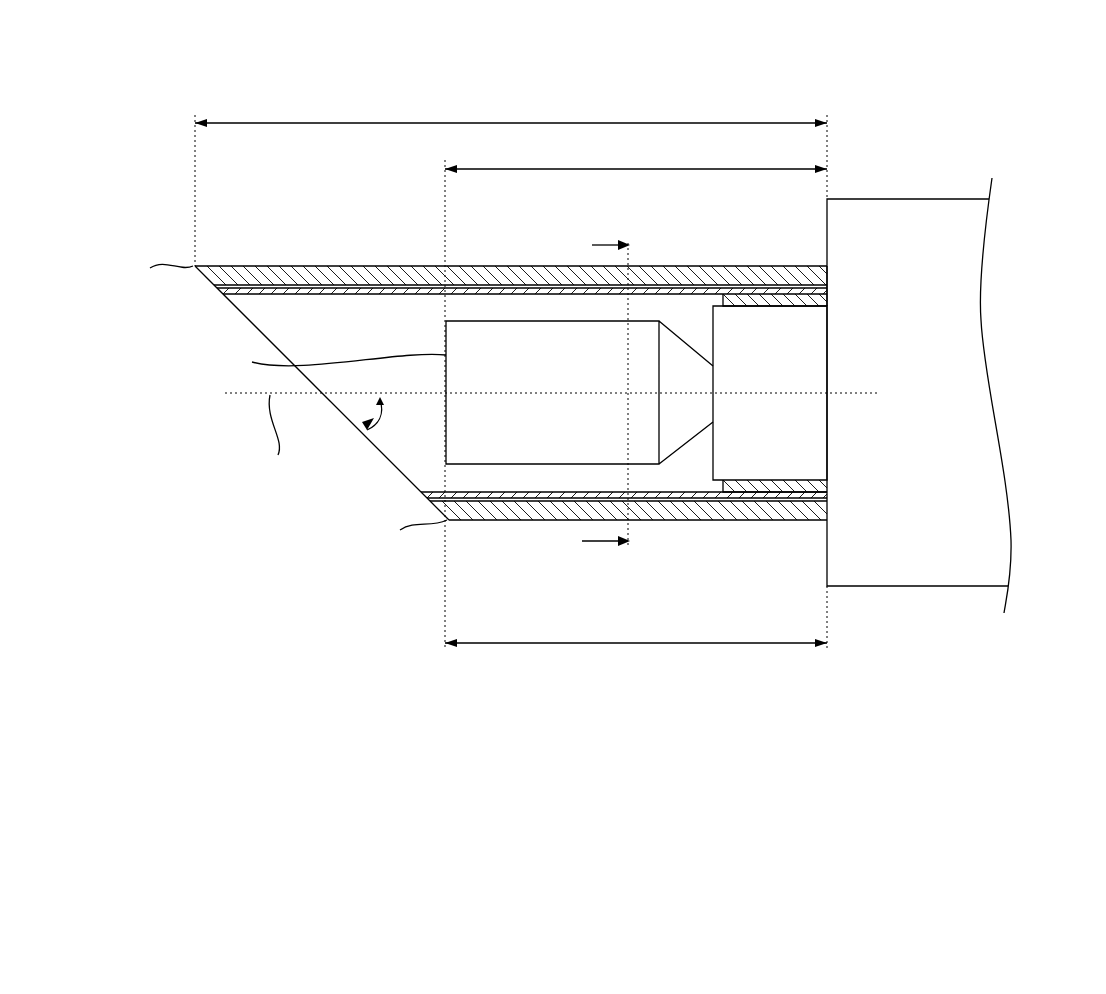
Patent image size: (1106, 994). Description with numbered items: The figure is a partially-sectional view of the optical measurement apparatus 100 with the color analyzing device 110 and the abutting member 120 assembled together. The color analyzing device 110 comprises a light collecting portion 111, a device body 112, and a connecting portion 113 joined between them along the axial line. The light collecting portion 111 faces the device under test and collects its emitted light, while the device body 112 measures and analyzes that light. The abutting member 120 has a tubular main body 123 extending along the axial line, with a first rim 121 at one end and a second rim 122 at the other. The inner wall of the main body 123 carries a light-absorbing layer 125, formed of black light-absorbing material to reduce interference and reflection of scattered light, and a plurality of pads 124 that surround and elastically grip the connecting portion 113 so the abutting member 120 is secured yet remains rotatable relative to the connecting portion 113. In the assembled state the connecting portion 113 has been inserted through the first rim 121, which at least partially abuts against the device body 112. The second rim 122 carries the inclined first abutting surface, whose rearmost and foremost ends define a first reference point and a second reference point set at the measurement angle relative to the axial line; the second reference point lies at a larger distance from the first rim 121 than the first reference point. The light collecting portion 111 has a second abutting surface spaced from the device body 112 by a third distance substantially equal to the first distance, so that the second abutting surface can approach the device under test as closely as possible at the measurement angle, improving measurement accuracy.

The optical measurement apparatus 100 is at (1086, 69).
The color analyzing device 110 is at (190, 640).
The light collecting portion 111 is at (485, 343).
The device body 112 is at (908, 586).
The connecting portion 113 is at (755, 462).
The abutting member 120 is at (190, 747).
The first rim 121 is at (827, 266).
The second rim 122 is at (259, 330).
The main body 123 is at (290, 275).
The pads 124 is at (743, 300).
The light-absorbing layer 125 is at (363, 290).